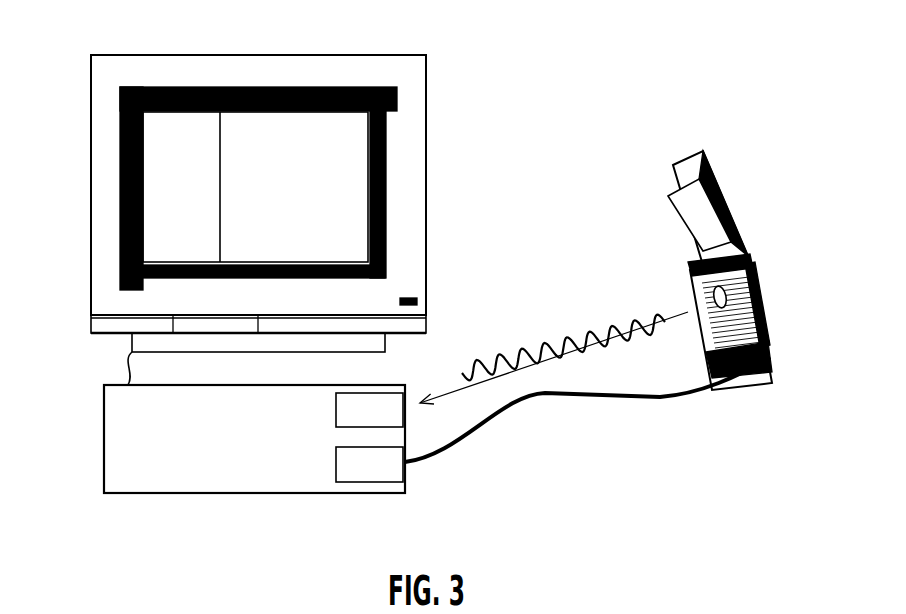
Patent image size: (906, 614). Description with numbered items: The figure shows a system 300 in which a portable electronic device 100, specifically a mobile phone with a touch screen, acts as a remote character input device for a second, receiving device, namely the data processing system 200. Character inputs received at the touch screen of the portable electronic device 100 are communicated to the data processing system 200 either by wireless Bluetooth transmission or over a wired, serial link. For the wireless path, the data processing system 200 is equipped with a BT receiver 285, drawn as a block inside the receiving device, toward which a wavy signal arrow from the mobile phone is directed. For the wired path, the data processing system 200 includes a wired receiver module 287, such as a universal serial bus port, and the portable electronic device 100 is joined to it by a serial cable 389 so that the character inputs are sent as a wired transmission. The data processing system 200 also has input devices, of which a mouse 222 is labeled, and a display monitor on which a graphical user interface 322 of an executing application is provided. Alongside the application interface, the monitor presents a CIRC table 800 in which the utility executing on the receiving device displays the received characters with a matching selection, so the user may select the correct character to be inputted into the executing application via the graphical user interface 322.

The system 300 is at (381, 22).
The mouse 222 is at (91, 194).
The graphical user interface 322 is at (365, 238).
The CIRC table 800 is at (196, 211).
The data processing system 200 is at (267, 543).
The BT receiver 285 is at (389, 408).
The wired receiver module 287 is at (394, 474).
The serial cable 389 is at (537, 396).
The portable electronic device 100 is at (707, 142).